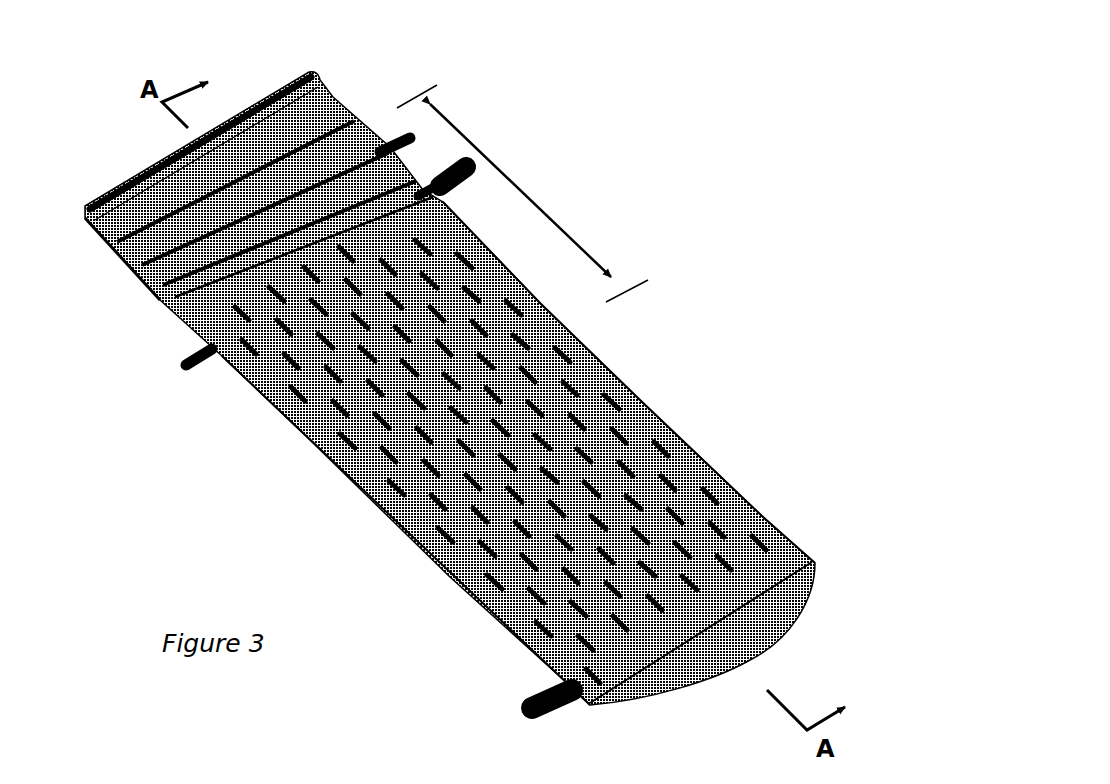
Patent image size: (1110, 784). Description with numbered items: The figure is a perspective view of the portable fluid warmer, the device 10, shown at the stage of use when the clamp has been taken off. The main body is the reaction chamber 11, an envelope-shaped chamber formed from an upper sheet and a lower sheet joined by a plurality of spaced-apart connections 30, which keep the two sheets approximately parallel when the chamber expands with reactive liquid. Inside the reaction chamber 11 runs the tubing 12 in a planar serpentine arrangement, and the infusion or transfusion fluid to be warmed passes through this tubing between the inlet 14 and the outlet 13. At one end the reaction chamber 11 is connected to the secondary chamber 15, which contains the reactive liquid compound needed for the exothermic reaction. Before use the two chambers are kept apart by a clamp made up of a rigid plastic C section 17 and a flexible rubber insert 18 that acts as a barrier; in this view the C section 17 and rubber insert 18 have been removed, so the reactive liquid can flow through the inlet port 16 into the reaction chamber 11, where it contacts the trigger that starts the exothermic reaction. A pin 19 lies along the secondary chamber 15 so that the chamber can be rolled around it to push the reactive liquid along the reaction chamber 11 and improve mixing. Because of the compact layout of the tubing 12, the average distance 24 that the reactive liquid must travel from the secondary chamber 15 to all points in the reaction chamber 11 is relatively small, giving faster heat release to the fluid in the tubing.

The device 10 is at (742, 118).
The reaction chamber 11 is at (350, 478).
The tubing 12 is at (690, 493).
The outlet 13 is at (467, 183).
The inlet 14 is at (527, 710).
The secondary chamber 15 is at (150, 227).
The inlet port 16 is at (203, 309).
The rigid plastic C section 17 is at (197, 363).
The flexible rubber insert 18 is at (390, 140).
The pin 19 is at (123, 187).
The average distance 24 is at (527, 193).
The connections 30 is at (623, 390).